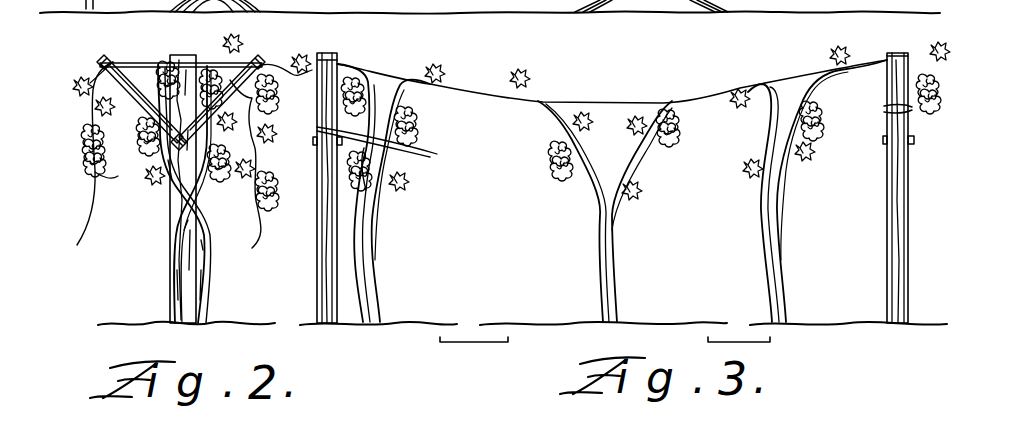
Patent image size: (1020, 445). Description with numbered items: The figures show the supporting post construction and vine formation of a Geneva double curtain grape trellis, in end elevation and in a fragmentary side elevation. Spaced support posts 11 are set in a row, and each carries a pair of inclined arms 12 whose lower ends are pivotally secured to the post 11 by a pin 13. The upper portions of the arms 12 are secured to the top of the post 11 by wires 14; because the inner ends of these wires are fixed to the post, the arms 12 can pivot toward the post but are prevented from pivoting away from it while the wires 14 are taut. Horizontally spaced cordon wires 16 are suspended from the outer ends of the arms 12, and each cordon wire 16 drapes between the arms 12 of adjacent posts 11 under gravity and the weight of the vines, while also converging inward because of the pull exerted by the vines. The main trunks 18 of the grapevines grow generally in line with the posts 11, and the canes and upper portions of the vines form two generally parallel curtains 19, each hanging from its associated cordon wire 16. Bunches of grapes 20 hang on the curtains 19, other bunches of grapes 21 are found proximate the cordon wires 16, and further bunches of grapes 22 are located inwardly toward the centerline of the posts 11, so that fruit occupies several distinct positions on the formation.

In FIG. 2, the support post 11 is at (170, 292).
In FIG. 3, the support post 11 is at (317, 292).
In FIG. 2, the inclined arm 12 is at (108, 97).
In FIG. 3, the inclined arm 12 is at (905, 109).
In FIG. 2, the pin 13 is at (180, 142).
In FIG. 3, the pin 13 is at (883, 139).
In FIG. 2, the wire 14 is at (110, 60).
In FIG. 3, the cordon wire 16 is at (498, 100).
In FIG. 2, the main trunk 18 is at (206, 274).
In FIG. 3, the main trunk 18 is at (363, 258).
In FIG. 2, the curtain 19 is at (88, 114).
In FIG. 2, the bunch of grapes 20 is at (80, 150).
In FIG. 3, the bunch of grapes 20 is at (367, 187).
In FIG. 2, the bunch of grapes 21 is at (290, 72).
In FIG. 2, the bunch of grapes 22 is at (203, 63).
In FIG. 3, the bunch of grapes 22 is at (412, 117).